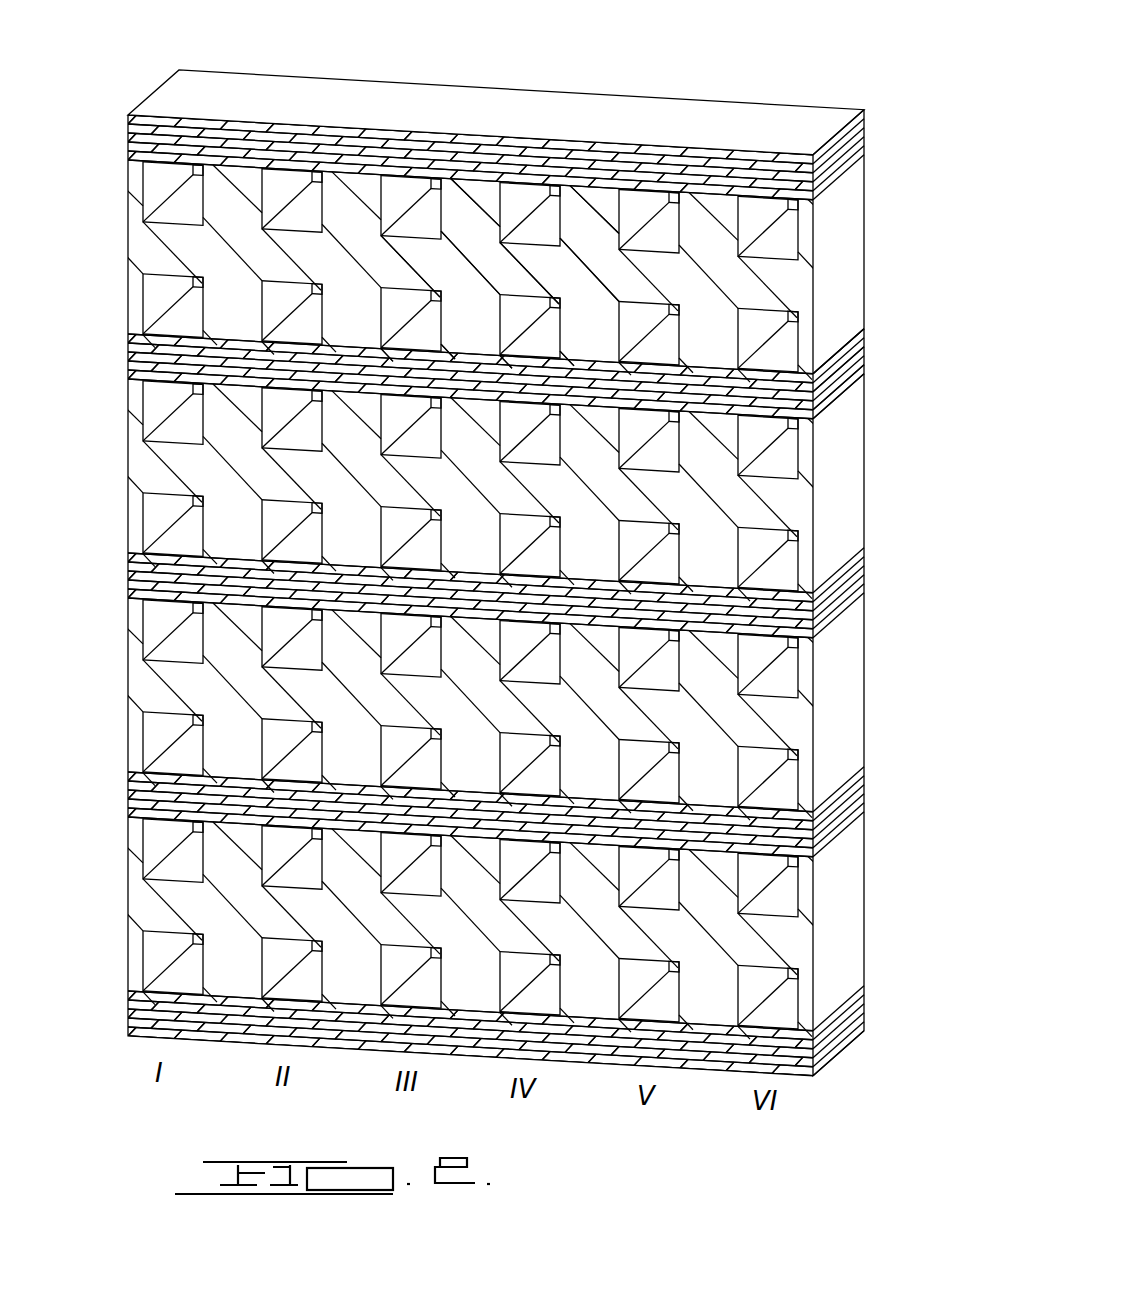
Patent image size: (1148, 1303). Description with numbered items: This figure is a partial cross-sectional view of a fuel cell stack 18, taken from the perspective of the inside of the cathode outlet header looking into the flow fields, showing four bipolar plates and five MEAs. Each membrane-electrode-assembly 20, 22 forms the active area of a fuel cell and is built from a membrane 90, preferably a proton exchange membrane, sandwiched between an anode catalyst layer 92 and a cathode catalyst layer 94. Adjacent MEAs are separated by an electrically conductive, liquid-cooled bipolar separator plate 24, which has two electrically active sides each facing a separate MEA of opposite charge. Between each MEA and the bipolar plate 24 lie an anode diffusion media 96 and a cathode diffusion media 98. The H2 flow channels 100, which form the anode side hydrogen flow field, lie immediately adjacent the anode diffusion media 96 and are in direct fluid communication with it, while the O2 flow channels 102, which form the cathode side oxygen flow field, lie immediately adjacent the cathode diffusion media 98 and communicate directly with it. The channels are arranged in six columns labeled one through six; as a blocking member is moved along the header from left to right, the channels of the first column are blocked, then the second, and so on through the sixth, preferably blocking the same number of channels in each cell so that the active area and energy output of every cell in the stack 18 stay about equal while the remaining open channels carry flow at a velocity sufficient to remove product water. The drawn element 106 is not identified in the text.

The fuel cell stack 18 is at (782, 87).
The membrane-electrode-assembly 20 is at (127, 112).
The membrane-electrode-assembly 22 is at (127, 112).
The bipolar separator plate 24 is at (173, 252).
The membrane 90 is at (860, 356).
The anode catalyst layer 92 is at (862, 331).
The cathode catalyst layer 94 is at (845, 382).
The anode diffusion media 96 is at (823, 372).
The cathode diffusion media 98 is at (823, 418).
The H2 flow channels 100 is at (275, 318).
The O2 flow channels 102 is at (168, 177).
The diagonal channel walls 106 is at (587, 212).